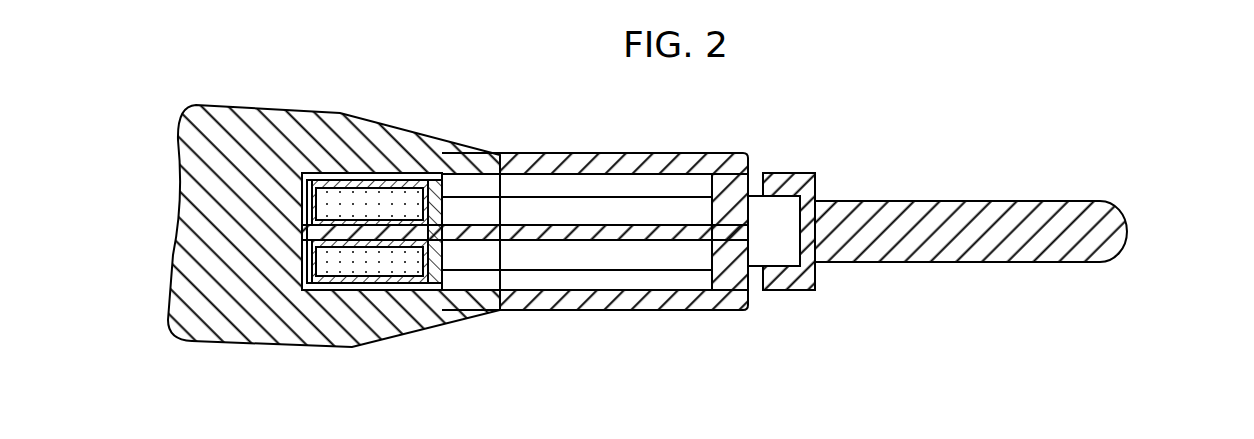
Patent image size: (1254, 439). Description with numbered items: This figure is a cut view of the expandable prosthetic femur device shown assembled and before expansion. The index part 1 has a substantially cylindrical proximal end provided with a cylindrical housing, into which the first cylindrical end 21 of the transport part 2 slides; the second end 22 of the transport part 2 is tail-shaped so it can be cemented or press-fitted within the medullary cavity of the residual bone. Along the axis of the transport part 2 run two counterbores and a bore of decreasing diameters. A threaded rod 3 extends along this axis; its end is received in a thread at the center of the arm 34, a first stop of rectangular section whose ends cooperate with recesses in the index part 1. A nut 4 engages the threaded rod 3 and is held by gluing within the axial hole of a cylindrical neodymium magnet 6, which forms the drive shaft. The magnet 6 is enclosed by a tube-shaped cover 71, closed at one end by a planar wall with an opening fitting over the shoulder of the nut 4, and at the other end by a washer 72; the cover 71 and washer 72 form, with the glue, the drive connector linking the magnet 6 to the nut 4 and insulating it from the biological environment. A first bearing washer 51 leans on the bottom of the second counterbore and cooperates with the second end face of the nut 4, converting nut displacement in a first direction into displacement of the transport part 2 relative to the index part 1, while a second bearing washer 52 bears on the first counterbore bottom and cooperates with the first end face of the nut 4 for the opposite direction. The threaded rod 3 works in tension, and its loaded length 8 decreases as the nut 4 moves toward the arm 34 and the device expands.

The index part 1 is at (320, 112).
The transport part 2 is at (782, 172).
The threaded rod 3 is at (520, 223).
The nut 4 is at (380, 250).
The magnet 6 is at (363, 207).
The loaded length 8 is at (598, 233).
The first cylindrical end 21 is at (340, 290).
The second end 22 is at (1002, 217).
The arm 34 is at (724, 268).
The first bearing washer 51 is at (440, 247).
The second bearing washer 52 is at (300, 202).
The cover 71 is at (410, 180).
The washer 72 is at (300, 262).